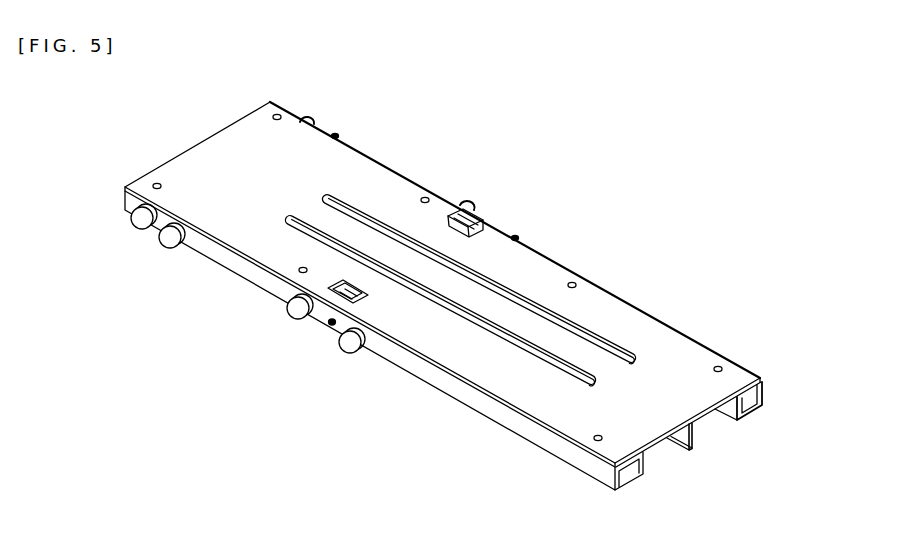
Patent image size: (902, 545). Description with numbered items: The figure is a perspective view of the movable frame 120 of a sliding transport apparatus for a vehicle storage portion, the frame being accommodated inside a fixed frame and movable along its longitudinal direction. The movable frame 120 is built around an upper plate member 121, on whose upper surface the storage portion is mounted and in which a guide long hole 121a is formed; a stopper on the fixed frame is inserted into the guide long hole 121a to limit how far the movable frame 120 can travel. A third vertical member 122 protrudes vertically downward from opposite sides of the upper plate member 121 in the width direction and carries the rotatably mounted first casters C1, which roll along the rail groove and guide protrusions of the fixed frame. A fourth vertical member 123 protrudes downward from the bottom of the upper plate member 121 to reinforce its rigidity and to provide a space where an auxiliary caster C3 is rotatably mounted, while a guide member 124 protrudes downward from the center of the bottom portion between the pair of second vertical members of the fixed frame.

The movable frame 120 is at (857, 421).
The upper plate member 121 is at (695, 392).
The guide long hole 121a is at (515, 296).
The third vertical member 122 is at (767, 395).
The fourth vertical member 123 is at (742, 408).
The guide member 124 is at (695, 438).
The first caster C1 is at (170, 248).
The auxiliary caster C3 is at (475, 213).